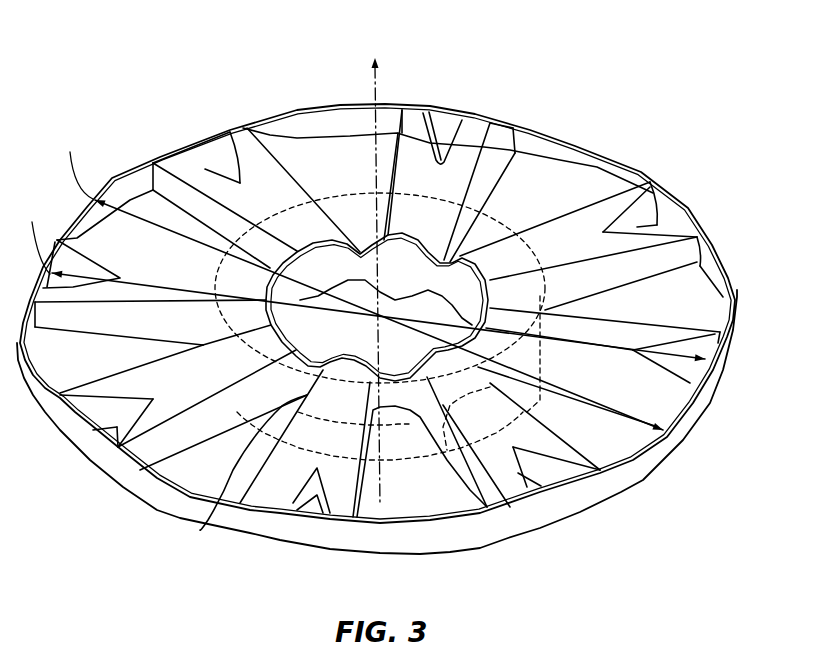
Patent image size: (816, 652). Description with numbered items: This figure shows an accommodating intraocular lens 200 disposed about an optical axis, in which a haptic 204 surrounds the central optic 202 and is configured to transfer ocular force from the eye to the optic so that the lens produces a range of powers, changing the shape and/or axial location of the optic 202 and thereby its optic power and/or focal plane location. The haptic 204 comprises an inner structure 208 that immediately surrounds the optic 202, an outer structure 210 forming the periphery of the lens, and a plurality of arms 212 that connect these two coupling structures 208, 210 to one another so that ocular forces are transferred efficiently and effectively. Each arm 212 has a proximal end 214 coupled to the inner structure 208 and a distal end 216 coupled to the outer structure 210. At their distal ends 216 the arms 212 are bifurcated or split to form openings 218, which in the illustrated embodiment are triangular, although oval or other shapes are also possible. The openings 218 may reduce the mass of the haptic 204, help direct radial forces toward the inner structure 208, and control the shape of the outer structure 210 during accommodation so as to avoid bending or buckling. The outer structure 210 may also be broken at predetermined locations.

The cover assembly 200 is at (190, 56).
The optic 202 is at (330, 203).
The rim flange 204 is at (680, 136).
The inner structure 208 is at (363, 243).
The outer structure 210 is at (620, 480).
The arms 212 is at (569, 226).
The proximal end 214 is at (200, 530).
The distal end 216 is at (363, 504).
The openings 218 is at (441, 150).